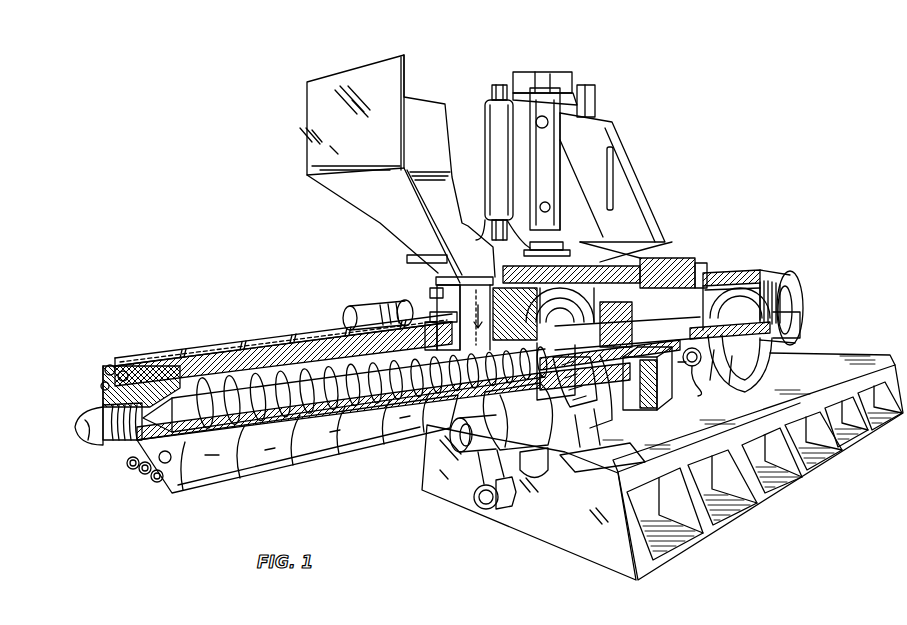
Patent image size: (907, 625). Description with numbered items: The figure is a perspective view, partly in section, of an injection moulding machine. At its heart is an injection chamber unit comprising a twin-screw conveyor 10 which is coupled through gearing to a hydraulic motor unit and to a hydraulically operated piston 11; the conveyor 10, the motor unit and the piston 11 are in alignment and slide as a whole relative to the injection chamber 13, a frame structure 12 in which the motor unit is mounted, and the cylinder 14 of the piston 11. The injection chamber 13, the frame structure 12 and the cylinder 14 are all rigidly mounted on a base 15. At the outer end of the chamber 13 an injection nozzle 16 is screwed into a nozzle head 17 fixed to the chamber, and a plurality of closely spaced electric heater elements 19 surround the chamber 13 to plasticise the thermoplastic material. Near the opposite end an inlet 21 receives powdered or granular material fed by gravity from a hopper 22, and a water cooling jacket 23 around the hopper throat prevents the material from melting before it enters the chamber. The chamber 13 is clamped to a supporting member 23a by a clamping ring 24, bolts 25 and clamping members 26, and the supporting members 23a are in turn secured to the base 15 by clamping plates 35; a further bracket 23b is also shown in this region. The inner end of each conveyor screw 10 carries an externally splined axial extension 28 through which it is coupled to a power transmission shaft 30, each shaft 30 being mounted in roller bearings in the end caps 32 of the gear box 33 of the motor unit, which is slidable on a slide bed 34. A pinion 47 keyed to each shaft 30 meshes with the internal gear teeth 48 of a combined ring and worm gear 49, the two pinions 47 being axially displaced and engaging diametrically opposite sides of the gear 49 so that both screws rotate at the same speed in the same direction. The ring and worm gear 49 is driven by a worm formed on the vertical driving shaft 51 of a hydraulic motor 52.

The twin-screw conveyor 10 is at (231, 370).
The hydraulically operated piston 11 is at (769, 292).
The frame structure 12 is at (687, 270).
The injection chamber 13 is at (285, 347).
The cylinder 14 is at (720, 273).
The base 15 is at (518, 523).
The injection nozzle 16 is at (88, 437).
The nozzle head 17 is at (102, 396).
The heater elements 19 is at (134, 357).
The inlet 21 is at (450, 284).
The hopper 22 is at (310, 143).
The water cooling jacket 23 is at (394, 302).
The supporting member 23a is at (554, 467).
The motor clamp bracket 23b is at (744, 377).
The clamping ring 24 is at (480, 467).
The bolts 25 is at (456, 438).
The clamping members 26 is at (558, 427).
The axial extension 28 is at (592, 368).
The power transmission shaft 30 is at (650, 278).
The end caps 32 is at (628, 375).
The gear box 33 is at (668, 408).
The slide bed 34 is at (612, 428).
The clamping plates 35 is at (597, 462).
The pinion 47 is at (606, 320).
The internal gear teeth 48 is at (603, 256).
The combined ring and worm gear 49 is at (612, 270).
The vertical driving shaft 51 is at (538, 252).
The hydraulic motor 52 is at (596, 125).